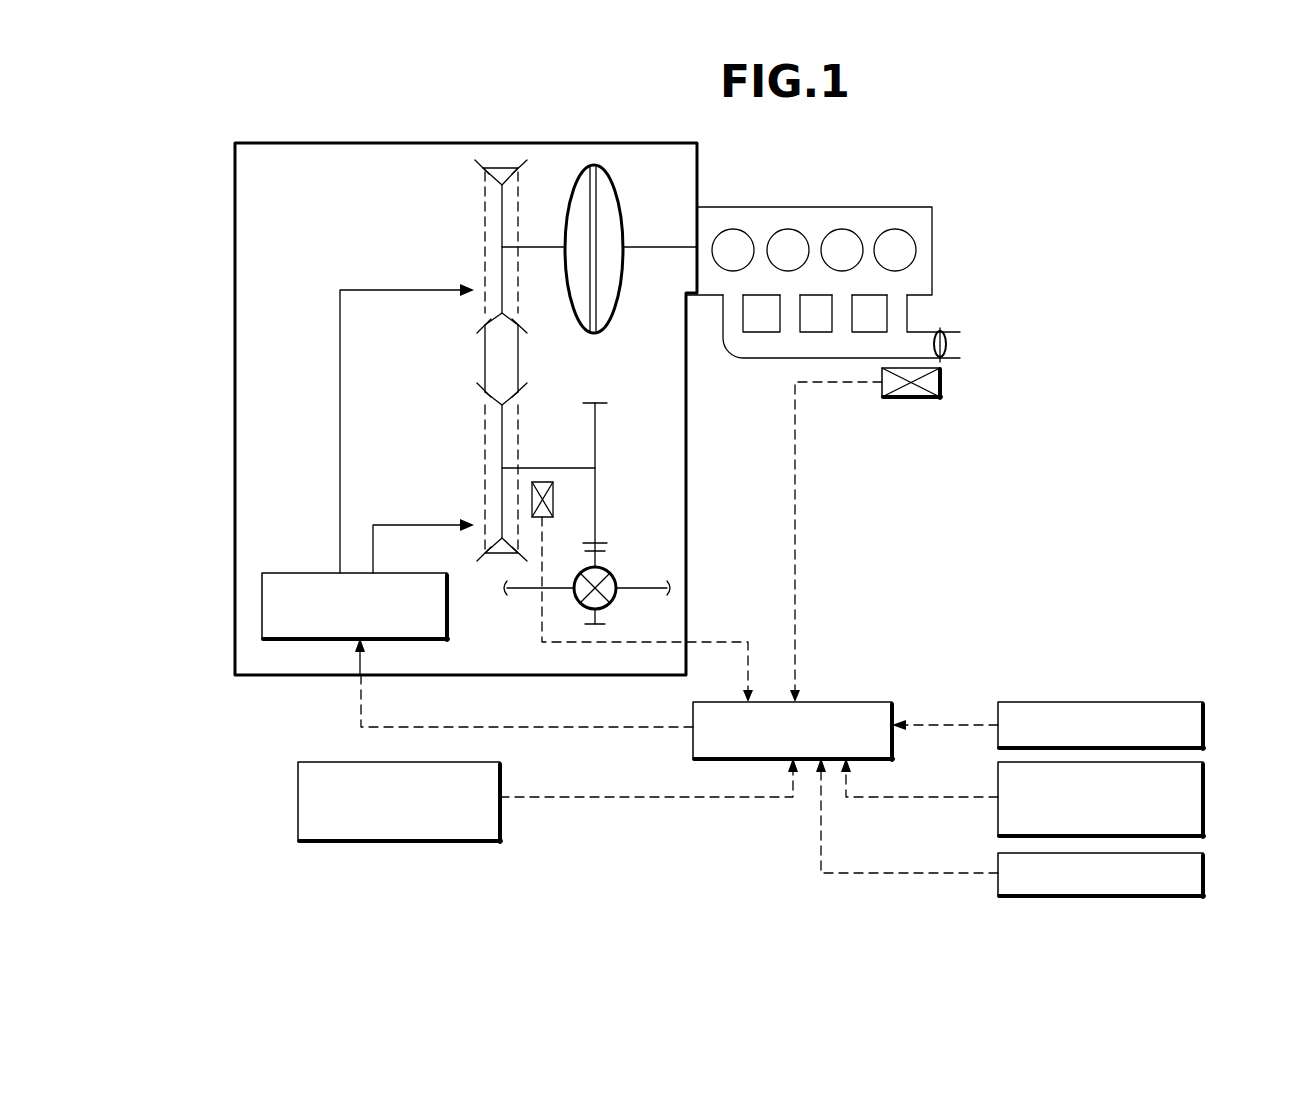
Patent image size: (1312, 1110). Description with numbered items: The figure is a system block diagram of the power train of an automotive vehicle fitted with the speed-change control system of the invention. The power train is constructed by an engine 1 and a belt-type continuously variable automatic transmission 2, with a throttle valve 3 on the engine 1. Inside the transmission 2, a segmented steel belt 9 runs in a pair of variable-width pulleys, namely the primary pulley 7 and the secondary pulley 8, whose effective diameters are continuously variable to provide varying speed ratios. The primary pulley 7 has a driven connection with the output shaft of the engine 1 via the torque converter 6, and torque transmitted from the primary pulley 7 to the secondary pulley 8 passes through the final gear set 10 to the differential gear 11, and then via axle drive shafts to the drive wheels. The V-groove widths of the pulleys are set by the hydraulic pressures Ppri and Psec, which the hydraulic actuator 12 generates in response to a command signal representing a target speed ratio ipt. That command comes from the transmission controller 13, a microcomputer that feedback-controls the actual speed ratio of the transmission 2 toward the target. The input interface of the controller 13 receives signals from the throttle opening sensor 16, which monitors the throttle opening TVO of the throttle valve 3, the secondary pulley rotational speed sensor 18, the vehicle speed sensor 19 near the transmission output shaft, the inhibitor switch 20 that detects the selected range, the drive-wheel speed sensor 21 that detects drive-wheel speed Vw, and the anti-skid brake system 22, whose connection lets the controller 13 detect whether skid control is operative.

The engine 1 is at (872, 207).
The continuously variable automatic transmission 2 is at (235, 233).
The throttle valve 3 is at (950, 343).
The torque converter 6 is at (620, 205).
The primary pulley 7 is at (478, 163).
The secondary pulley 8 is at (480, 385).
The segmented steel belt 9 is at (483, 355).
The final gear set 10 is at (600, 560).
The differential gear 11 is at (615, 598).
The hydraulic actuator 12 is at (308, 573).
The transmission controller 13 is at (845, 702).
The throttle opening sensor 16 is at (930, 397).
The secondary pulley rotational speed sensor 18 is at (541, 482).
The vehicle speed sensor 19 is at (298, 787).
The inhibitor switch 20 is at (1203, 720).
The drive-wheel speed sensor 21 is at (1203, 797).
The anti-skid brake system 22 is at (1203, 873).